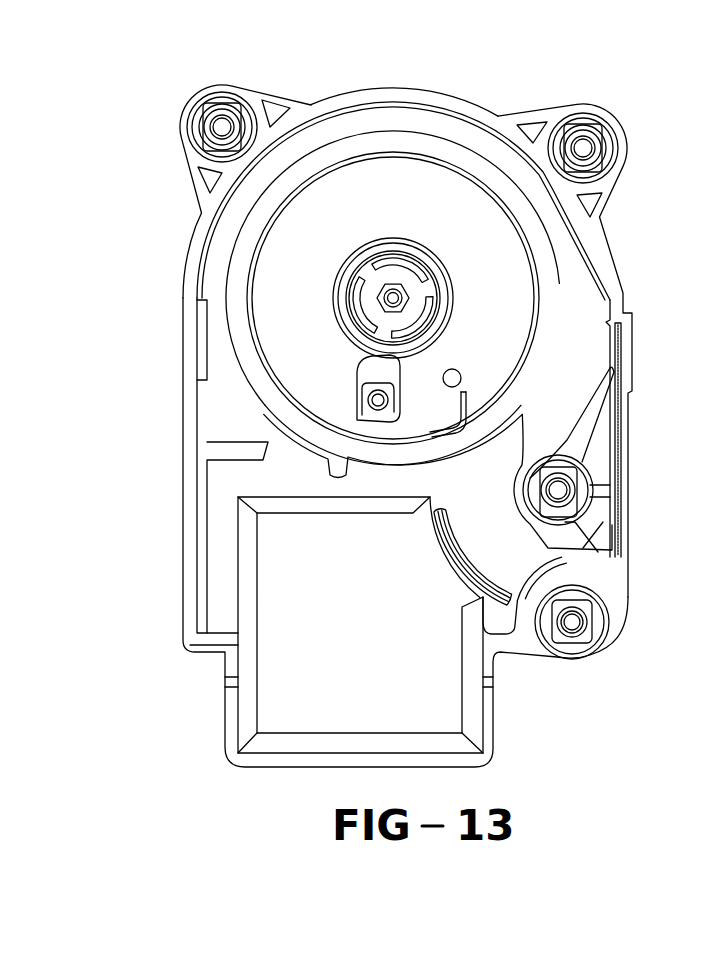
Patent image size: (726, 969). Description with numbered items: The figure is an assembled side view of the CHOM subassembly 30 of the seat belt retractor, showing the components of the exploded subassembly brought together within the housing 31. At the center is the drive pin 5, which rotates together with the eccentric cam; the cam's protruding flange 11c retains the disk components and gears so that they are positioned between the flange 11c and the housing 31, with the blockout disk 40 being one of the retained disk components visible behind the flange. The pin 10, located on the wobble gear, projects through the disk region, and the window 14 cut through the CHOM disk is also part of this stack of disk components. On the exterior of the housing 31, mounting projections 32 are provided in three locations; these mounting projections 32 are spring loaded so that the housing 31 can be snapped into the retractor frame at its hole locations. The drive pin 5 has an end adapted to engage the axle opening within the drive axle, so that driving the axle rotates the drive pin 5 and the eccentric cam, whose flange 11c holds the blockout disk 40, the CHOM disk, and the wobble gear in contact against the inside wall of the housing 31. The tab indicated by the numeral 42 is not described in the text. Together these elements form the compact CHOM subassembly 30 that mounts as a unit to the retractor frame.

The drive pin 5 is at (405, 295).
The pin 10 is at (378, 402).
The protruding flange 11c is at (438, 308).
The window 14 is at (394, 55).
The CHOM subassembly 30 is at (440, 86).
The housing 31 is at (330, 103).
The mounting projections 32 is at (583, 140).
The blockout disk 40 is at (278, 280).
The stop tab 42 is at (373, 377).